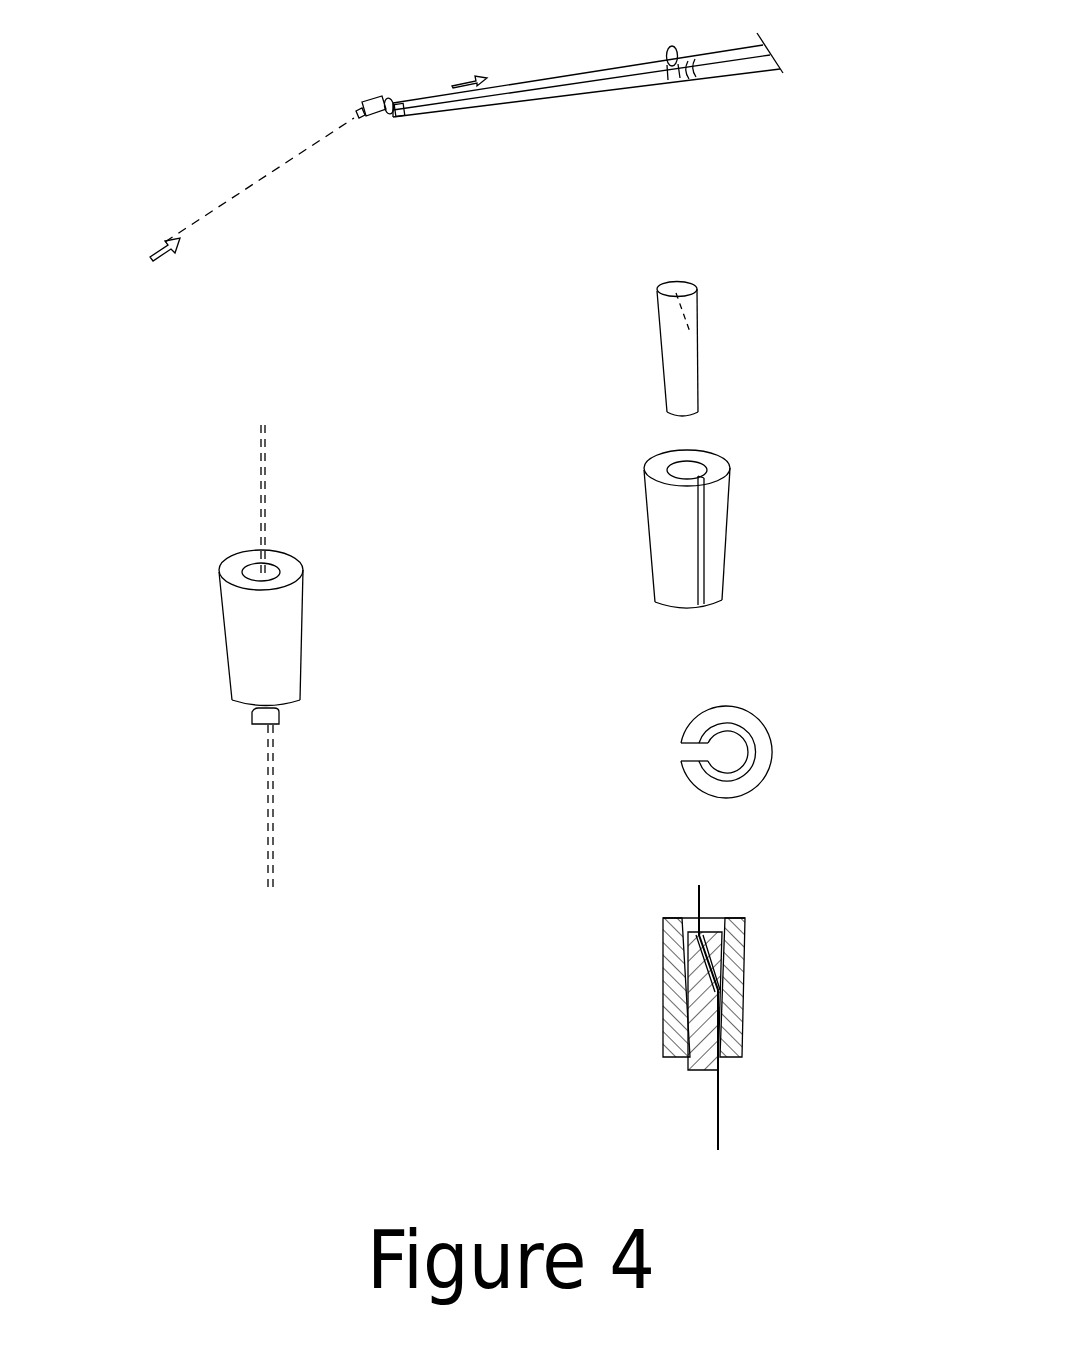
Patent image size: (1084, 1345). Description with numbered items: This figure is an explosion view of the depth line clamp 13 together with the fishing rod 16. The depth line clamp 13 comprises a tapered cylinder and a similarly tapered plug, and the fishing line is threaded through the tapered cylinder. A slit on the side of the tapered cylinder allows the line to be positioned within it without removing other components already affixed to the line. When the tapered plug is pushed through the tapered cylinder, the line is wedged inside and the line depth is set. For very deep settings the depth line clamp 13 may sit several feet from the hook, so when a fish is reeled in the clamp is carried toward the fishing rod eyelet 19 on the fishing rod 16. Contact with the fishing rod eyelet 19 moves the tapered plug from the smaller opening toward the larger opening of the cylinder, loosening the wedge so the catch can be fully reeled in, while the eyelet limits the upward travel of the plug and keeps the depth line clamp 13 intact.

The depth line clamp 13 is at (726, 741).
The fishing rod 16 is at (564, 91).
The fishing rod eyelet 19 is at (388, 100).